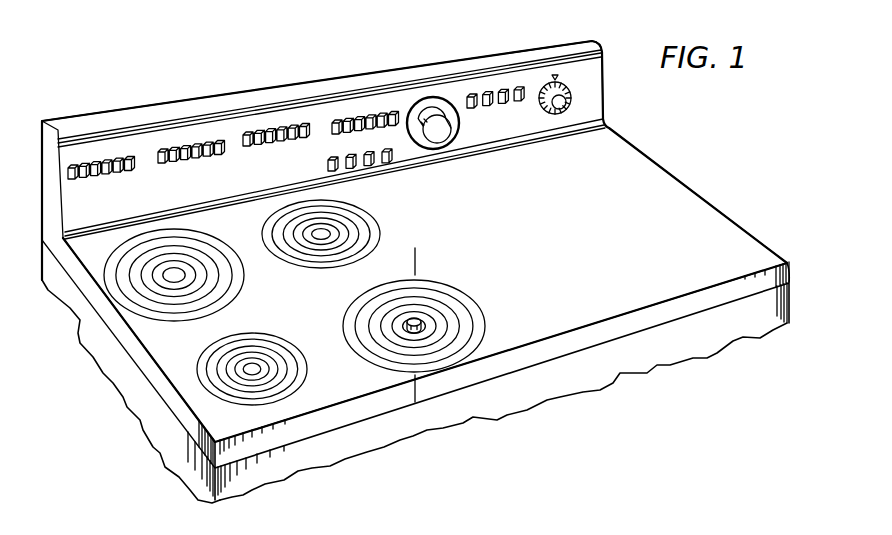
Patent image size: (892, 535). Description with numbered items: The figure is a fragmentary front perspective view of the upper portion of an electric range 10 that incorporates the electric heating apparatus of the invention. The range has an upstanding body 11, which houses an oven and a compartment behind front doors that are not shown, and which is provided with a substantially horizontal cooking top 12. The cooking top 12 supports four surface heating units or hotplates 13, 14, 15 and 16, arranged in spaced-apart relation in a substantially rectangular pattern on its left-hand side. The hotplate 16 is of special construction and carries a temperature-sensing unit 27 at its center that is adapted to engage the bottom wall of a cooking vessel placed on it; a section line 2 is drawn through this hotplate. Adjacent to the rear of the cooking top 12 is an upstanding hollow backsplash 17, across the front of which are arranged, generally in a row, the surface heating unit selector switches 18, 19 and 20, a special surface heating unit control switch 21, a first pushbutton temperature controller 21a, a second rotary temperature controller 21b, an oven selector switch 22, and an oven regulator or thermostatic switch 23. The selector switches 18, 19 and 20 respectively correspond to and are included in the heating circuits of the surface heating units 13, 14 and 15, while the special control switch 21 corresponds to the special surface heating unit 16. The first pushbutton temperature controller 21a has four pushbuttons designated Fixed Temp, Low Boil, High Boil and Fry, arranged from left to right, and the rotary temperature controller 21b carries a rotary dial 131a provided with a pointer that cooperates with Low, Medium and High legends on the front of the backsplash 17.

The electric range 10 is at (61, 347).
The upstanding body 11 is at (148, 410).
The cooking top 12 is at (648, 188).
The surface heating unit 13 is at (277, 383).
The surface heating unit 14 is at (208, 292).
The surface heating unit 15 is at (367, 238).
The surface heating unit 16 is at (475, 327).
The backsplash 17 is at (408, 72).
The surface heating unit selector switch 18 is at (103, 150).
The surface heating unit selector switch 19 is at (184, 138).
The surface heating unit selector switch 20 is at (272, 124).
The special surface heating unit control switch 21 is at (354, 108).
The first pushbutton temperature controller 21a is at (366, 168).
The second rotary temperature controller 21b is at (428, 108).
The oven selector switch 22 is at (497, 85).
The oven regulator or thermostatic switch 23 is at (573, 91).
The temperature-sensing unit 27 is at (410, 321).
The rotary dial 131a is at (458, 129).
The section line 2- 2 is at (418, 262).